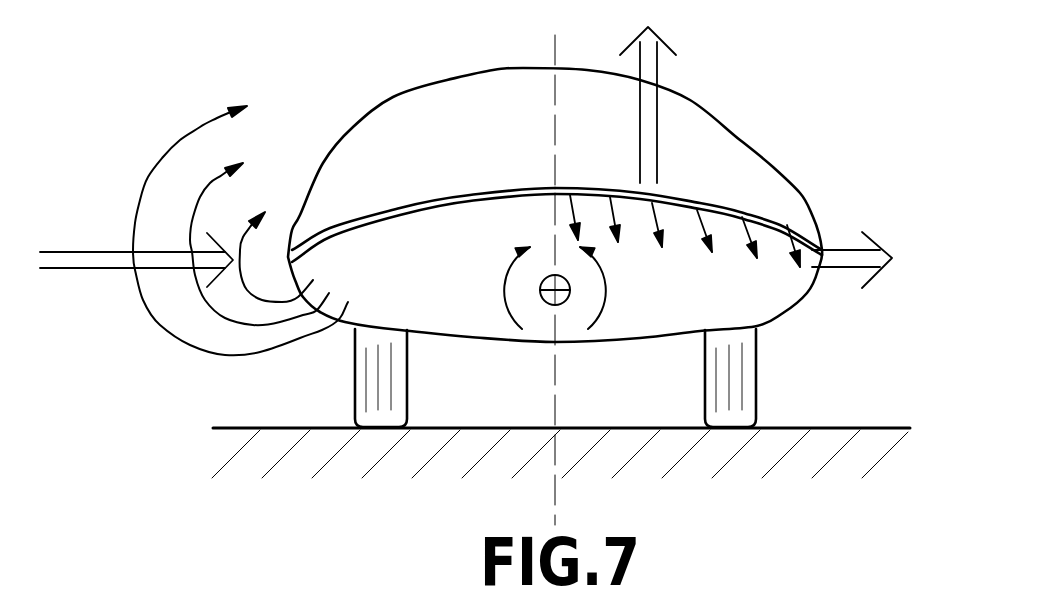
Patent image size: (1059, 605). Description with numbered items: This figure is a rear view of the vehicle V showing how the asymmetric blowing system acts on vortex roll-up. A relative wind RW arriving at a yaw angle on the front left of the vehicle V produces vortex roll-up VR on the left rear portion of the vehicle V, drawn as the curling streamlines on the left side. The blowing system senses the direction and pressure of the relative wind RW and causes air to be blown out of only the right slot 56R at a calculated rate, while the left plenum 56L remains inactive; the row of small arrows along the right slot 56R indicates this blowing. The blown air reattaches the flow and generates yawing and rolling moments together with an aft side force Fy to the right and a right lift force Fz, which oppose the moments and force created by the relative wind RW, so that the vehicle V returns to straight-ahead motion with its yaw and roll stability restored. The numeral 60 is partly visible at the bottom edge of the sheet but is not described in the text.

The left plenum 56L is at (490, 196).
The right plenum 56R is at (580, 188).
The vehicle V is at (445, 302).
The relative wind RW is at (136, 256).
The vortex roll-up VR is at (157, 350).
The right lift force Fz is at (667, 105).
The aft side force Fy is at (874, 260).
The reference numeral (cut off) 60 is at (332, 598).